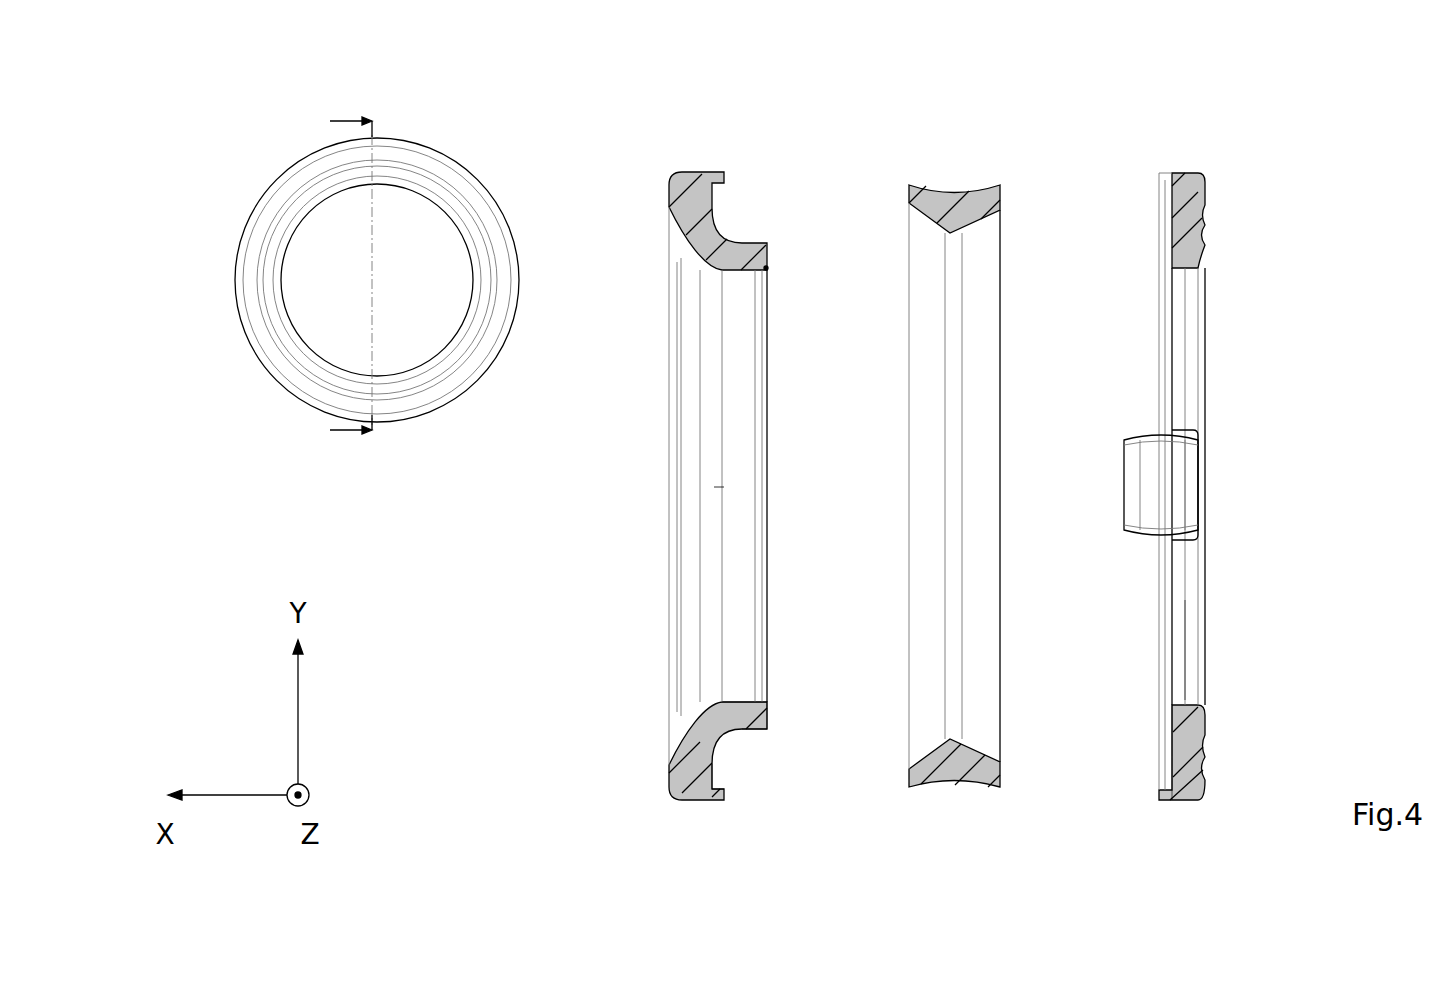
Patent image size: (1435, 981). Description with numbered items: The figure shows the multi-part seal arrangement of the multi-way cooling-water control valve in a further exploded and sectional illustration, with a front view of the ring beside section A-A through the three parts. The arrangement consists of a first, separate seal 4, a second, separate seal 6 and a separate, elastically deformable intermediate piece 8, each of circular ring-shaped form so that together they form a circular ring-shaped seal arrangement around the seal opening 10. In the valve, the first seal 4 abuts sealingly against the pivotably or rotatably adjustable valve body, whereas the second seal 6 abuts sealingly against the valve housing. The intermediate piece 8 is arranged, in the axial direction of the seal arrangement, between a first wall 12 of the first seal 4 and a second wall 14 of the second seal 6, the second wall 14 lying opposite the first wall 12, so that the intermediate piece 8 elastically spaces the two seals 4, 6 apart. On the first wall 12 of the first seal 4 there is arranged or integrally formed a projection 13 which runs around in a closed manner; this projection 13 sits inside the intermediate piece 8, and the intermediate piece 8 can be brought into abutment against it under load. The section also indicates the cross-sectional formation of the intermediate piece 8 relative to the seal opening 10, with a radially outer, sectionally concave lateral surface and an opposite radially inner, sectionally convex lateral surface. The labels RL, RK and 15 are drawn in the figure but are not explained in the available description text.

The seal opening 10 is at (320, 258).
The first seal 4 is at (690, 410).
The radial edge RL is at (767, 271).
The projection 13 is at (742, 722).
The first wall 12 is at (710, 765).
The intermediate piece 8 is at (947, 208).
The second seal 6 is at (1187, 217).
The ring nose RK is at (1153, 483).
The flange 15 is at (1185, 635).
The second wall 14 is at (1172, 760).